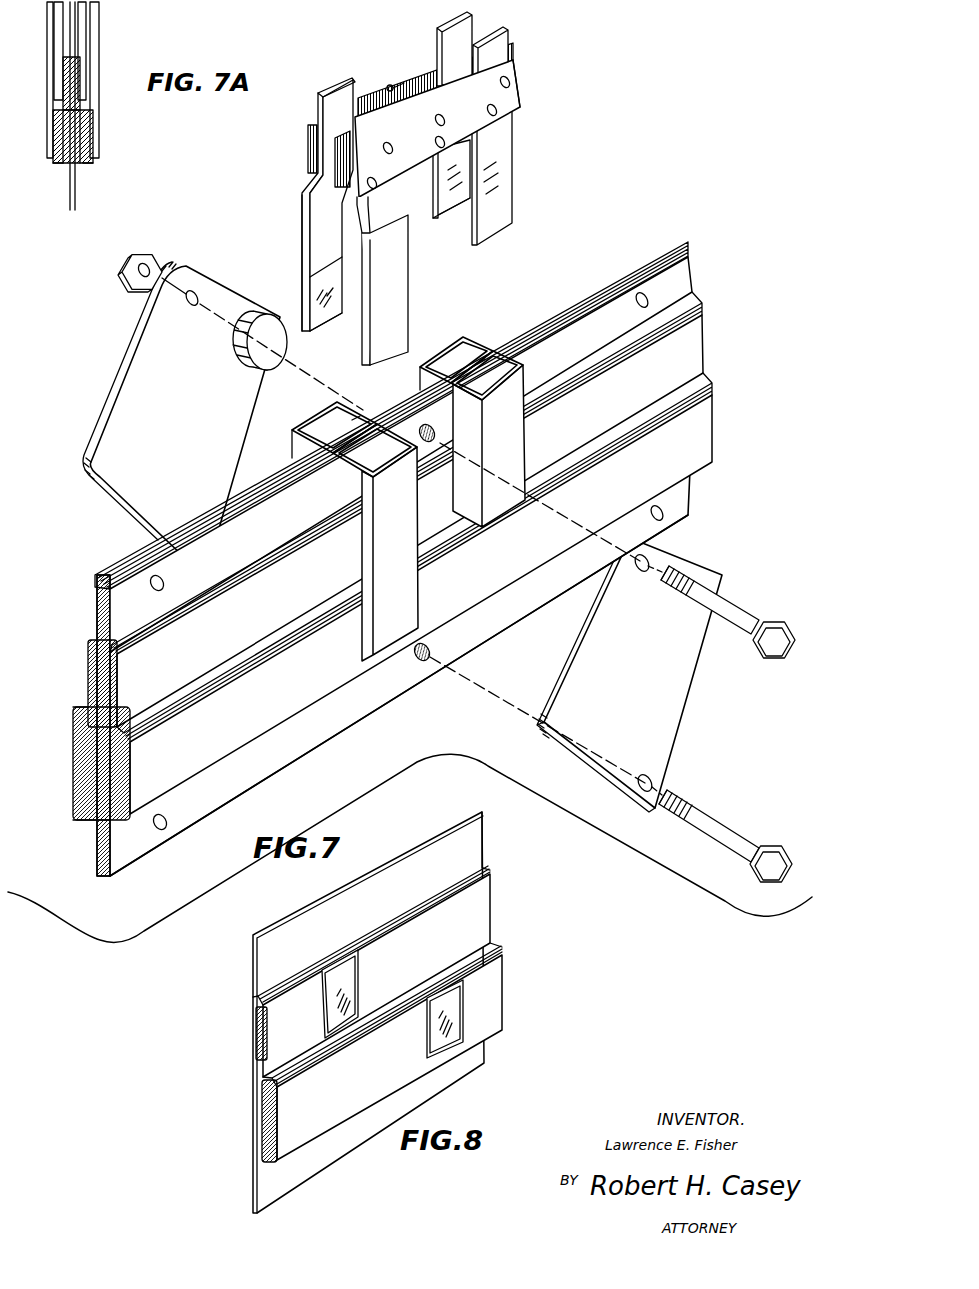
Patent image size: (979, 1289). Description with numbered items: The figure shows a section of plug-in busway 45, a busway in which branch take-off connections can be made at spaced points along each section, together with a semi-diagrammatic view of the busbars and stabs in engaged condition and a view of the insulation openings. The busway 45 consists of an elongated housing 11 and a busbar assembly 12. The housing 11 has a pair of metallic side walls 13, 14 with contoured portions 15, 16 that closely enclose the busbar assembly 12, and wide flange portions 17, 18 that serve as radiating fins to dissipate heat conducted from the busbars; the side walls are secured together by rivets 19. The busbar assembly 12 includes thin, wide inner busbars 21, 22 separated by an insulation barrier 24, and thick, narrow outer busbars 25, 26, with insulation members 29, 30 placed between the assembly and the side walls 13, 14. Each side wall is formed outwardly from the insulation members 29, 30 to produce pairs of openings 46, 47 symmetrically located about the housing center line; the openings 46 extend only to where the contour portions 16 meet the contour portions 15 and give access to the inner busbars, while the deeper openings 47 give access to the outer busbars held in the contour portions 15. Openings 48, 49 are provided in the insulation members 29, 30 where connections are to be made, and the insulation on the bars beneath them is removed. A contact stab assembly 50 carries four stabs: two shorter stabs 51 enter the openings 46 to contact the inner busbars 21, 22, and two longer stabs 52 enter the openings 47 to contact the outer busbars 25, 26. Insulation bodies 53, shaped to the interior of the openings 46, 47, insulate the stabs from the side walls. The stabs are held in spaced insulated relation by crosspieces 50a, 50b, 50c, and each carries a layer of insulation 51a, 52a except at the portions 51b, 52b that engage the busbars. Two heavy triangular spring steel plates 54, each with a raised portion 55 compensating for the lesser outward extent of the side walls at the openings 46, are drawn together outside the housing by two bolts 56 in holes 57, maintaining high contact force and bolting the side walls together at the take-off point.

In FIG. 7, the elongated housing 11 is at (293, 743).
In FIG. 7, the busbar assembly 12 is at (73, 760).
In FIG. 7, the metallic side wall 13 is at (97, 600).
In FIG. 7, the metallic side wall 14 is at (120, 860).
In FIG. 7, the contoured portion 15 is at (73, 737).
In FIG. 7, the contoured portion 16 is at (88, 665).
In FIG. 7, the wide flange portion 17 is at (219, 798).
In FIG. 7, the wide flange portion 18 is at (146, 603).
In FIG. 7, the rivet 19 is at (163, 578).
In FIG. 7A, the inner busbar 21 is at (65, 165).
In FIG. 7A, the inner busbar 22 is at (77, 165).
In FIG. 8, the inner busbar 22 is at (253, 1037).
In FIG. 7A, the insulation barrier 24 is at (70, 203).
In FIG. 7, the insulation barrier 24 is at (479, 363).
In FIG. 7A, the outer busbar 25 is at (55, 163).
In FIG. 7A, the outer busbar 26 is at (92, 163).
In FIG. 8, the outer busbar 26 is at (264, 1110).
In FIG. 7, the insulation member 29 is at (362, 414).
In FIG. 7, the insulation member 30 is at (458, 404).
In FIG. 8, the insulation member 30 is at (253, 956).
In FIG. 7, the plug-in busway 45 is at (656, 246).
In FIG. 7, the opening 46 is at (450, 350).
In FIG. 7, the opening 47 is at (322, 420).
In FIG. 8, the opening 48 is at (427, 1028).
In FIG. 8, the opening 49 is at (322, 1000).
In FIG. 7, the contact stab assembly 50 is at (523, 55).
In FIG. 7, the crosspiece 50a is at (513, 88).
In FIG. 7, the crosspiece 50b is at (437, 77).
In FIG. 7, the crosspiece 50c is at (388, 84).
In FIG. 7A, the contact stab 51 is at (54, 32).
In FIG. 7, the contact stab 51 is at (478, 18).
In FIG. 7, the layer of insulation 51a is at (445, 205).
In FIG. 7, the engaging portion 51b is at (457, 212).
In FIG. 7A, the contact stab 52 is at (47, 133).
In FIG. 7, the contact stab 52 is at (370, 105).
In FIG. 7, the layer of insulation 52a is at (302, 280).
In FIG. 7, the engaging portion 52b is at (368, 336).
In FIG. 7, the insulation body 53 is at (345, 412).
In FIG. 7, the spring steel plate 54 is at (194, 388).
In FIG. 7, the raised portion 55 is at (258, 376).
In FIG. 7, the bolt 56 is at (733, 609).
In FIG. 7, the hole 57 is at (420, 431).